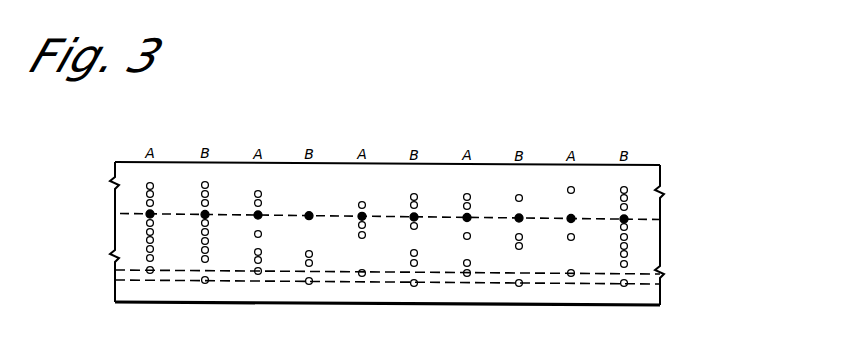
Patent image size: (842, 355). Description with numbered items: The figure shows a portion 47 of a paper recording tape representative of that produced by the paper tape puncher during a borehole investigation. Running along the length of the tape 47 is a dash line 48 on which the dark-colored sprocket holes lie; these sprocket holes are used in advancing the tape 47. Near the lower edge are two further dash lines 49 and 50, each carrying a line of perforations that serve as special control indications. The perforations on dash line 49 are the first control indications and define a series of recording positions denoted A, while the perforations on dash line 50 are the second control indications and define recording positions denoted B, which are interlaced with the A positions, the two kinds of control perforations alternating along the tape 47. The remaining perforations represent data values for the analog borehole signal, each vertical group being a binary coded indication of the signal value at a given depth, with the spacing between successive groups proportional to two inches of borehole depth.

The portion of paper recording tape 47 is at (530, 308).
The dash line 48 is at (642, 218).
The dash line 49 is at (377, 272).
The dash line 50 is at (425, 283).